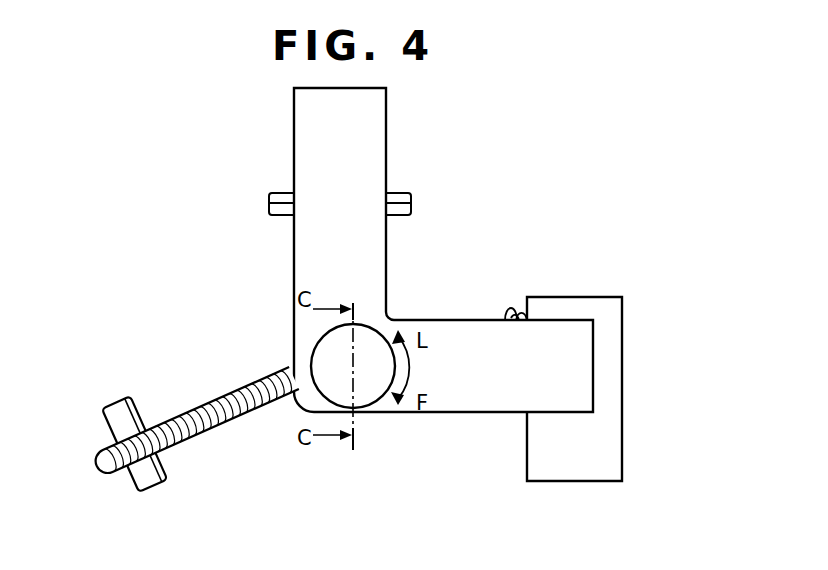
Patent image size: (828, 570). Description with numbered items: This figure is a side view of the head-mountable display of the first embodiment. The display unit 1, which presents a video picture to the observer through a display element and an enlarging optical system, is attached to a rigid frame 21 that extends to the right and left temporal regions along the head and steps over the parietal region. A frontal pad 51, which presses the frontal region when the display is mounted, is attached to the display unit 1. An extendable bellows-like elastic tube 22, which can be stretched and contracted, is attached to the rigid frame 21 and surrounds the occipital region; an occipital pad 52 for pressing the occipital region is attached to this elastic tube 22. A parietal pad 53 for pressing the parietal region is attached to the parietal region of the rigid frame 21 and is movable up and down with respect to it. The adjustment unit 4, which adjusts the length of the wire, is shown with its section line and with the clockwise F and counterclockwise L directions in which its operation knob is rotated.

The display unit 1 is at (607, 345).
The adjustment unit 4 is at (368, 385).
The rigid frame 21 is at (299, 131).
The elastic tube 22 is at (187, 420).
The frontal pad 51 is at (512, 308).
The occipital pad 52 is at (148, 490).
The parietal pad 53 is at (275, 197).